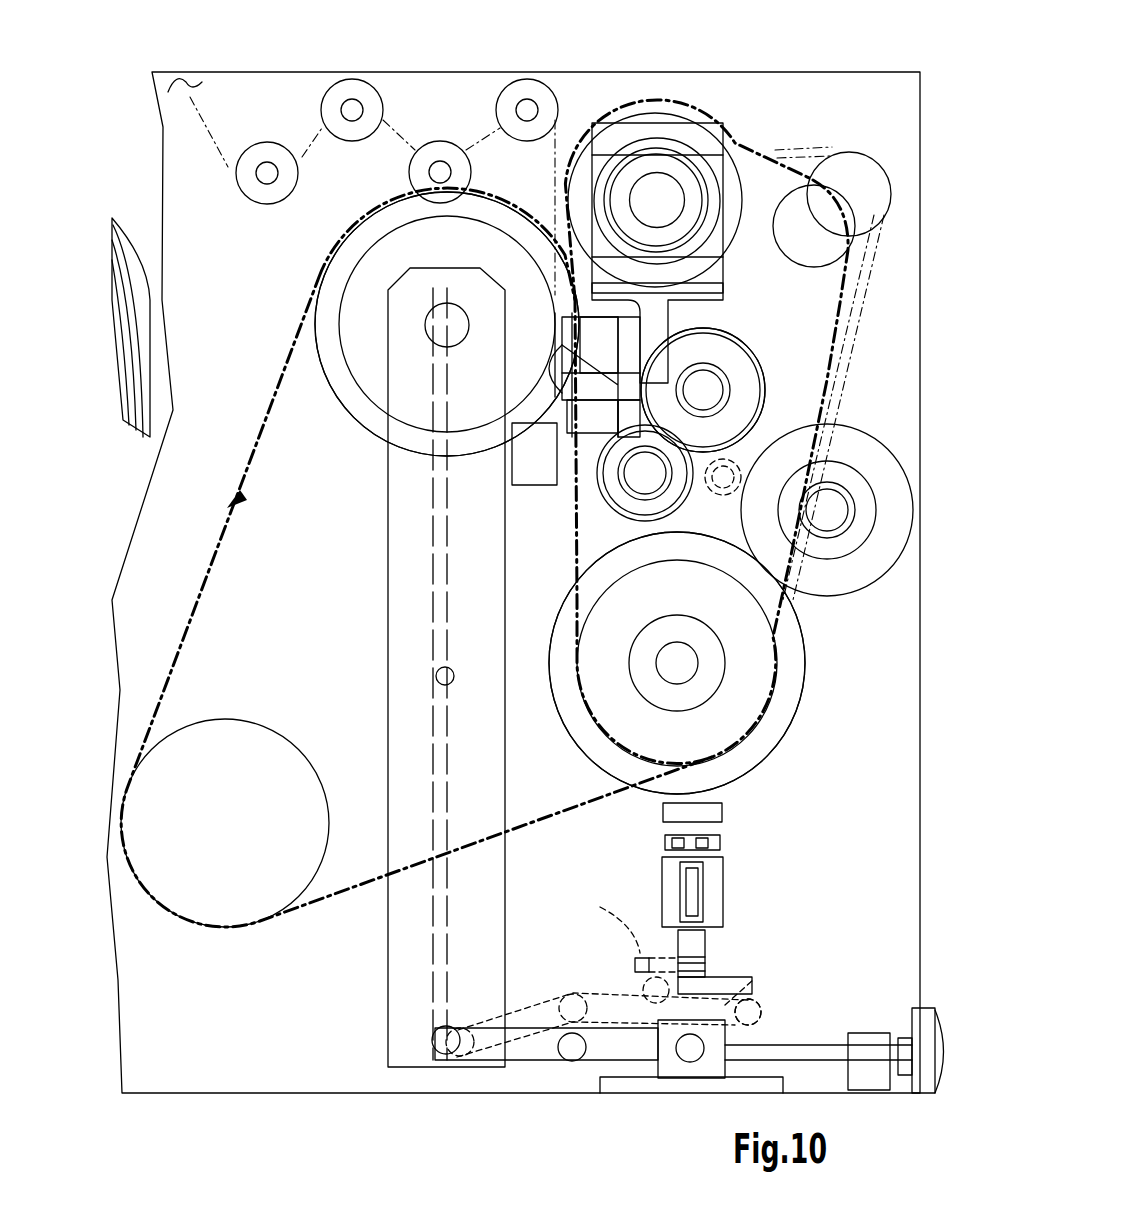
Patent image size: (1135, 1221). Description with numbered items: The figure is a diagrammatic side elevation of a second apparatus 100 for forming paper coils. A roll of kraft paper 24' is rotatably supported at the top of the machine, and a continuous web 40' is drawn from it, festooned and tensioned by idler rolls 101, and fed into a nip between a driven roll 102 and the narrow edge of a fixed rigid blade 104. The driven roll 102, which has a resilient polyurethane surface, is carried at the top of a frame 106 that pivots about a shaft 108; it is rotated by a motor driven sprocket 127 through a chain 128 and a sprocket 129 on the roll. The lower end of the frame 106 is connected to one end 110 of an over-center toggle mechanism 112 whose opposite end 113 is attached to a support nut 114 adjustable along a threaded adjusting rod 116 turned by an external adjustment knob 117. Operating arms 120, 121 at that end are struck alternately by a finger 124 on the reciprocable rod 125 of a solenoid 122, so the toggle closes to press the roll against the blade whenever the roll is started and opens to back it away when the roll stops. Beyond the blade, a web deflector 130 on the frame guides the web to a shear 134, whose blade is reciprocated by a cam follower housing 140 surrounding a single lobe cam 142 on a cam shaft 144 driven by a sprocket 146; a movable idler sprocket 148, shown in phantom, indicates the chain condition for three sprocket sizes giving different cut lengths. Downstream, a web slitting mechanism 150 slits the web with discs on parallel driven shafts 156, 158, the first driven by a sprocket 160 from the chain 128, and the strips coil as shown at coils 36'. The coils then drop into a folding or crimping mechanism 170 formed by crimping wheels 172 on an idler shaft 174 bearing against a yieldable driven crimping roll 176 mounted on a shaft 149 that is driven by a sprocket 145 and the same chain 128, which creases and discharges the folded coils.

The second apparatus 100 is at (736, 70).
The roll of kraft paper 24' is at (130, 291).
The idler rolls 101 is at (443, 158).
The web 40' is at (523, 207).
The cam follower housing 140 is at (725, 140).
The sprocket 146 is at (748, 152).
The cam shaft 144 is at (682, 211).
The cam 142 is at (660, 235).
The shear 134 is at (677, 316).
The driven shaft 156 is at (716, 384).
The sprocket 160 is at (763, 372).
The coils 36' is at (706, 428).
The movable idler sprocket 148 is at (818, 258).
The fixed rigid blade 104 is at (577, 310).
The web deflector 130 is at (577, 310).
The sprocket 129 is at (320, 367).
The driven roll 102 is at (367, 405).
The driven shaft 158 is at (638, 477).
The web slitting mechanism 150 is at (608, 528).
The frame 106 is at (400, 559).
The chain 128 is at (200, 640).
The shaft 108 is at (436, 675).
The motor driven sprocket 127 is at (290, 756).
The end of toggle mechanism 110 is at (433, 1040).
The idler shaft 174 is at (836, 518).
The crimping wheels 172 is at (825, 585).
The folding or crimping mechanism 170 is at (820, 638).
The shaft 149 is at (681, 670).
The crimping roll 176 is at (786, 735).
The sprocket 145 is at (716, 738).
The solenoid 122 is at (713, 890).
The finger 124 is at (730, 985).
The reciprocable rod 125 is at (695, 948).
The operating arm 120 is at (645, 987).
The operating arm 121 is at (745, 1010).
The adjustment knob 117 is at (920, 1028).
The threaded adjusting rod 116 is at (813, 1053).
The support nut 114 is at (707, 1073).
The end of toggle mechanism 113 is at (690, 1047).
The over-center toggle mechanism 112 is at (532, 1053).